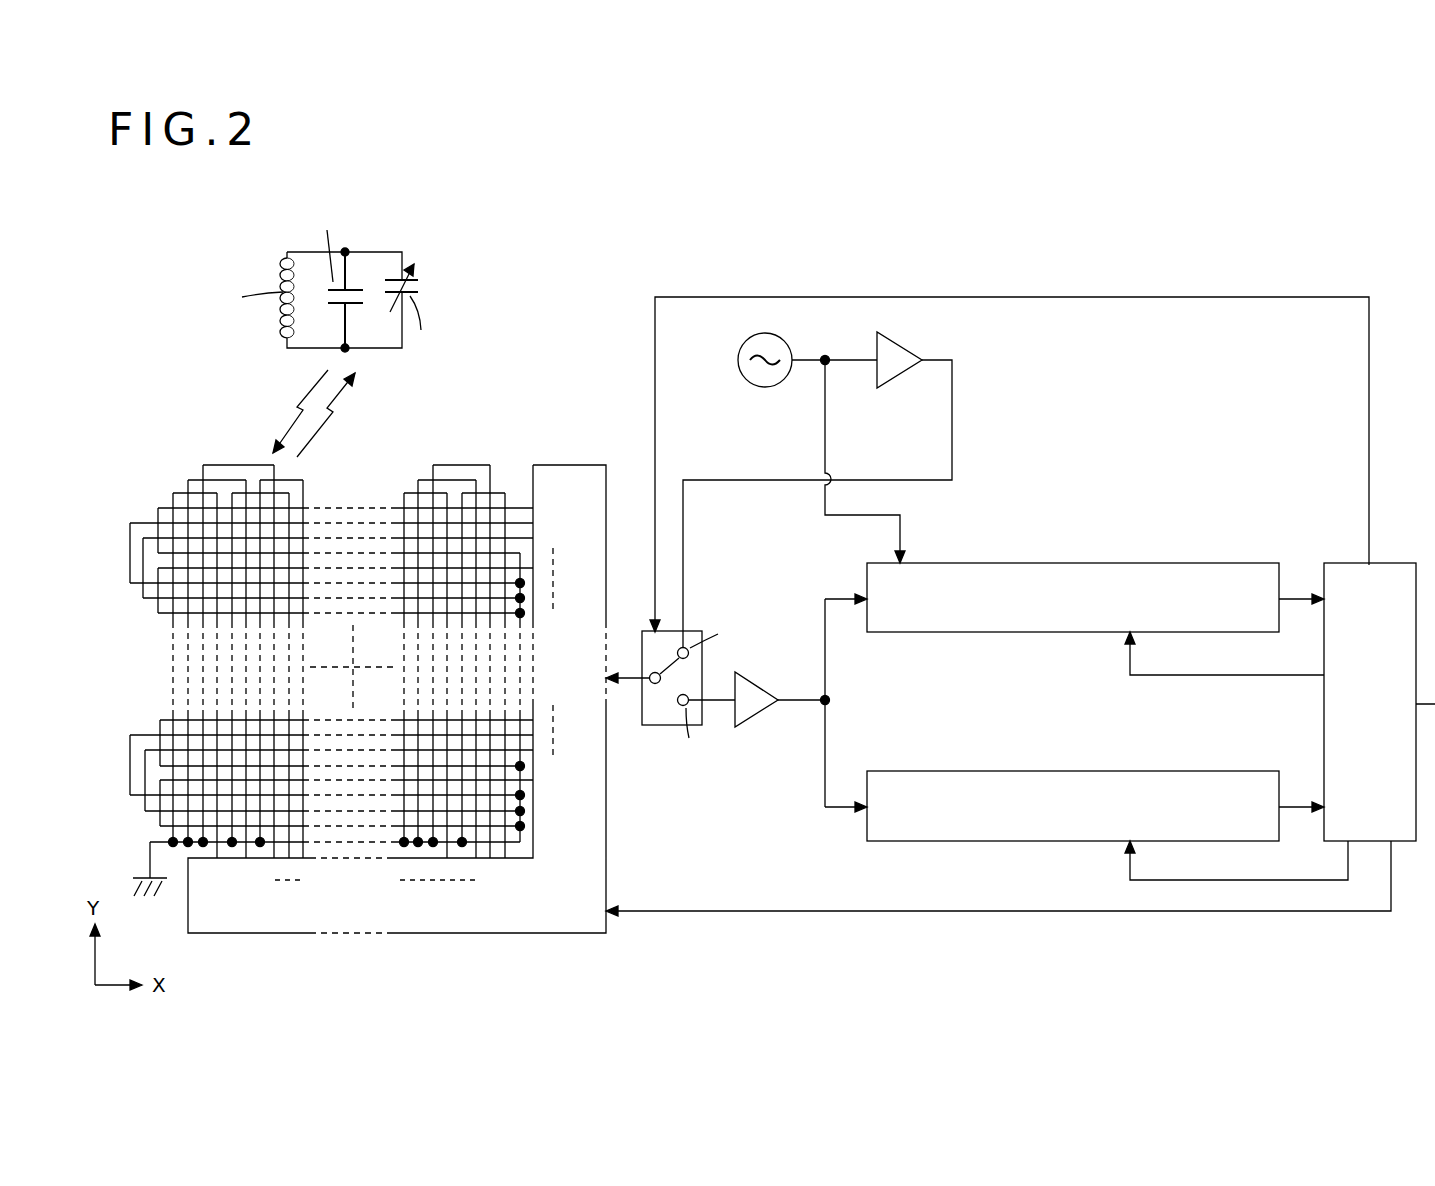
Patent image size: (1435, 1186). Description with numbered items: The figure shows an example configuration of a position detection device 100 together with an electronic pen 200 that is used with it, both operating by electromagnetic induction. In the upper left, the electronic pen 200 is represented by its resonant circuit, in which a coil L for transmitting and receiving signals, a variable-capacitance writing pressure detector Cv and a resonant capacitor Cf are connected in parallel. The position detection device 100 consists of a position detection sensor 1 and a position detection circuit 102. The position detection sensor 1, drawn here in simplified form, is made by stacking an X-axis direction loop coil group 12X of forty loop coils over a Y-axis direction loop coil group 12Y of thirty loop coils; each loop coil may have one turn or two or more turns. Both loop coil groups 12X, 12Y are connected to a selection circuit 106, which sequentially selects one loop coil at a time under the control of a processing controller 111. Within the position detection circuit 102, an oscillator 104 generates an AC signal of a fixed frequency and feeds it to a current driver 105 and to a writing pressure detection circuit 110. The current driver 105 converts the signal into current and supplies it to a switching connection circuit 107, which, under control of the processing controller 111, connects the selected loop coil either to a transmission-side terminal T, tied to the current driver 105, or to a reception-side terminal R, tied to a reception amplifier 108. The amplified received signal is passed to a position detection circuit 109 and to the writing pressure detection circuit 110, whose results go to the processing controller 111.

The electronic pen 200 is at (222, 230).
The position detection sensor 1 is at (158, 478).
The X-axis direction loop coil group 12X is at (448, 462).
The Y-axis direction loop coil group 12Y is at (128, 752).
The selection circuit 106 is at (548, 462).
The position detection circuit 102 is at (1066, 442).
The oscillator 104 is at (757, 388).
The current driver 105 is at (903, 373).
The switching connection circuit 107 is at (651, 726).
The reception amplifier 108 is at (757, 720).
The position detection circuit 109 is at (1020, 770).
The writing pressure detection circuit 110 is at (1085, 563).
The processing controller 111 is at (1410, 563).
The position detection device 100 is at (766, 937).